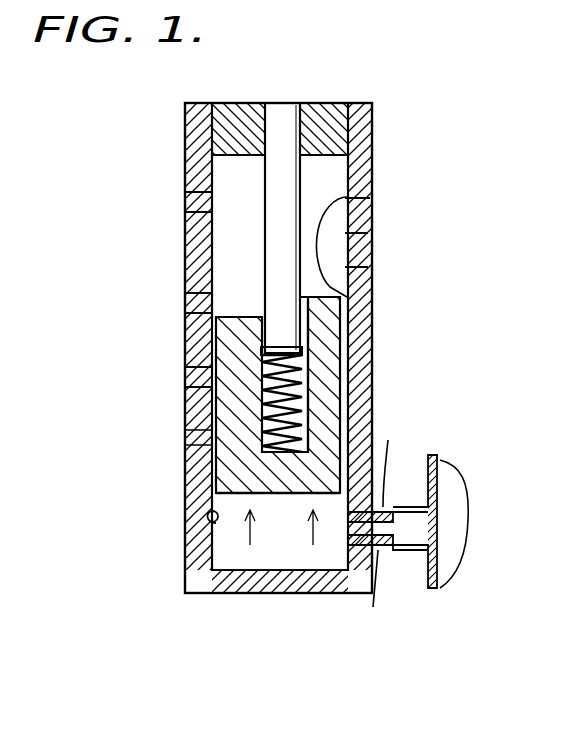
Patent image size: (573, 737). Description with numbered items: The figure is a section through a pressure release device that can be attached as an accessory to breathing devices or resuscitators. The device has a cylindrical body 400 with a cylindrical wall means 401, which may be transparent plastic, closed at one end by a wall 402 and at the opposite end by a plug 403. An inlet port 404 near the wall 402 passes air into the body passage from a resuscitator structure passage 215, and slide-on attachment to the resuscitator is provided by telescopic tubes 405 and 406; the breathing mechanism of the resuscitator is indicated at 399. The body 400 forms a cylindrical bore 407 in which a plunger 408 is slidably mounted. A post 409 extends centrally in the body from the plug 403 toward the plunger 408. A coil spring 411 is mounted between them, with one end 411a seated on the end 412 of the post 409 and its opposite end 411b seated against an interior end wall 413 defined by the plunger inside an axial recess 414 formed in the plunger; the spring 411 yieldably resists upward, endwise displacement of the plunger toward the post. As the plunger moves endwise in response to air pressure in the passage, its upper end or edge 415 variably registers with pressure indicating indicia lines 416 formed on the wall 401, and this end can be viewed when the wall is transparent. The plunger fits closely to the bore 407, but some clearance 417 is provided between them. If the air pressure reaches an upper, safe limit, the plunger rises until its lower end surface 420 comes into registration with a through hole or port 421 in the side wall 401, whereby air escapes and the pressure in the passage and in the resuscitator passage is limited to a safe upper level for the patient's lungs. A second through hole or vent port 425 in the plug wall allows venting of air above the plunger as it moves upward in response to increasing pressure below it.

The cylindrical body 400 is at (375, 105).
The cylindrical wall means 401 is at (193, 242).
The wall 402 is at (222, 594).
The plug 403 is at (310, 115).
The inlet port 404 is at (383, 545).
The telescopic tube 405 is at (407, 551).
The telescopic tube 406 is at (382, 505).
The cylindrical bore 407 is at (212, 528).
The plunger 408 is at (208, 489).
The post 409 is at (287, 175).
The coil spring 411 is at (305, 388).
The spring end 411a is at (263, 362).
The spring opposite end 411b is at (225, 466).
The post end 412 is at (272, 352).
The interior end wall 413 is at (305, 423).
The axial recess 414 is at (255, 398).
The plunger upper end 415 is at (345, 296).
The pressure indicating indicia lines 416 is at (374, 218).
The clearance 417 is at (205, 437).
The plunger lower end surface 420 is at (293, 495).
The through hole or port 421 is at (197, 374).
The vent port 425 is at (193, 202).
The breathing mechanism 399 is at (440, 462).
The resuscitator structure passage 215 is at (465, 525).